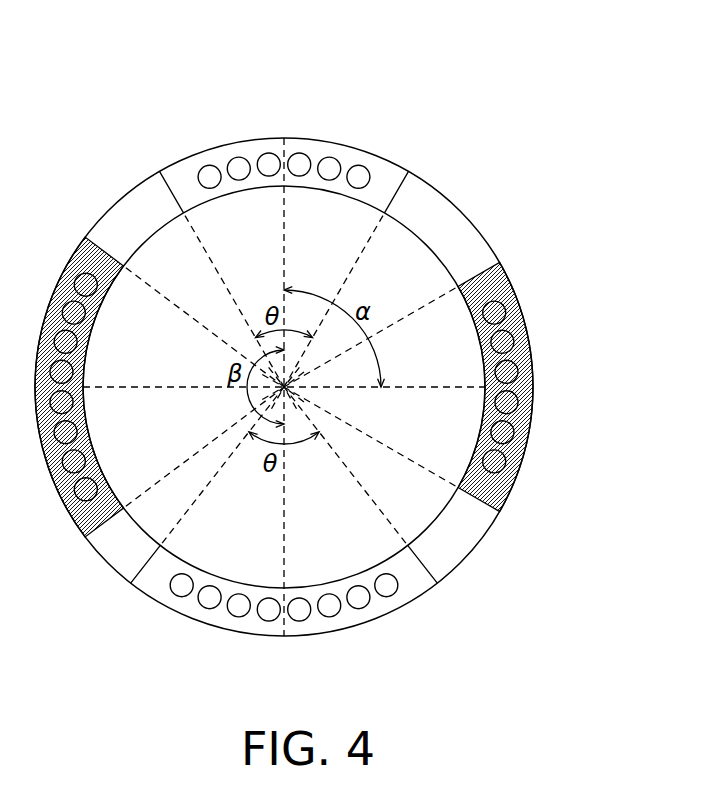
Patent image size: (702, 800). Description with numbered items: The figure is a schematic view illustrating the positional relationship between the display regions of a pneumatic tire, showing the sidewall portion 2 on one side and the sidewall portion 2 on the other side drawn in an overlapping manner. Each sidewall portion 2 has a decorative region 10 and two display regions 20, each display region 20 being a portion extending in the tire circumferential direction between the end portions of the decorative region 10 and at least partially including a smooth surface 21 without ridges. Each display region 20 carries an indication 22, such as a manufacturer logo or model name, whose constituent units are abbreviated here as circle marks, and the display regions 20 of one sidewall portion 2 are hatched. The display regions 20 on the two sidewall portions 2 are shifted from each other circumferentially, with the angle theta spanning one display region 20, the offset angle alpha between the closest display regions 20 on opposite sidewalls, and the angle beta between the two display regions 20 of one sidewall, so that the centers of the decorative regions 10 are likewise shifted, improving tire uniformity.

The decorative region 10 is at (467, 215).
The sidewall portion 2 is at (531, 318).
The display region 20 is at (297, 136).
The smooth surface 21 is at (343, 157).
The indication 22 is at (237, 168).